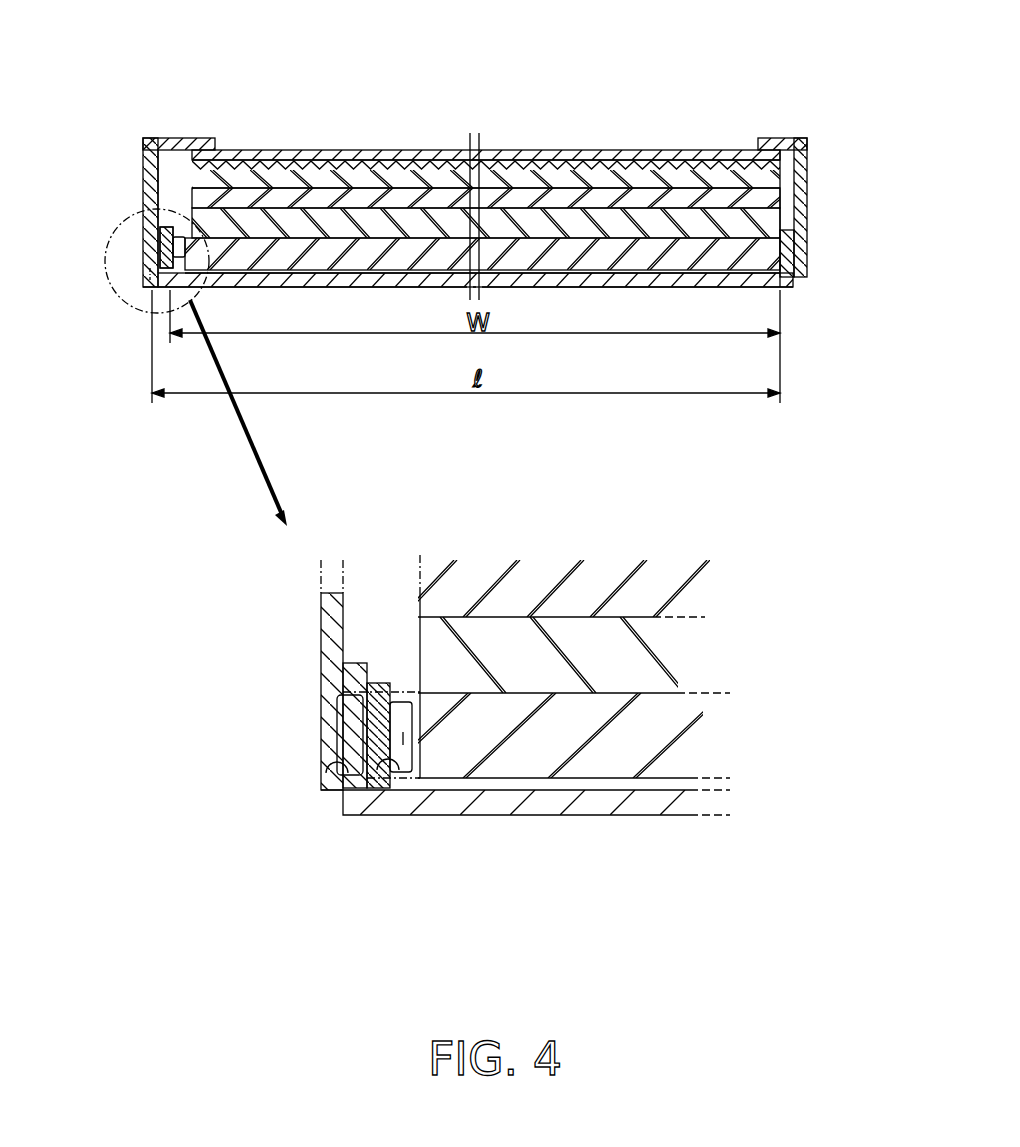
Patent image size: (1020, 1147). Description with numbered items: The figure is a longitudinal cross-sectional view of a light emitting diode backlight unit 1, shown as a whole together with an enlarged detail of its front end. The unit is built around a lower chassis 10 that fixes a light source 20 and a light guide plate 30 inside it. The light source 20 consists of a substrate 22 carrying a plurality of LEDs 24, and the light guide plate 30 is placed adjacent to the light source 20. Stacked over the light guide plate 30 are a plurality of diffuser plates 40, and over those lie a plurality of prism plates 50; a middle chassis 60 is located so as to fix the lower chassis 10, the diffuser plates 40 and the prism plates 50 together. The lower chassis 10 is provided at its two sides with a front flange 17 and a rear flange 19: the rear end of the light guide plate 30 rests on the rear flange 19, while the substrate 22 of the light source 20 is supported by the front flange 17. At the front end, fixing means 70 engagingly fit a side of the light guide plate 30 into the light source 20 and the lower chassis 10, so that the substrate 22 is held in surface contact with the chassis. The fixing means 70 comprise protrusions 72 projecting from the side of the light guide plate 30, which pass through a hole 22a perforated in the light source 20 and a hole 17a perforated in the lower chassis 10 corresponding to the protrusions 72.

The LED backlight unit 1 is at (650, 101).
The lower chassis 10 is at (717, 284).
The front flange 17 is at (152, 212).
The hole 17a is at (322, 770).
The rear flange 19 is at (792, 255).
The light source 20 is at (165, 205).
The substrate 22 is at (162, 268).
The hole 22a is at (406, 779).
The LED 24 is at (183, 247).
The light guide plate 30 is at (745, 250).
The diffuser plate 40 is at (674, 197).
The prism plate 50 is at (540, 150).
The middle chassis 60 is at (184, 143).
The fixing means 70 is at (146, 269).
The protrusion 72 is at (337, 742).